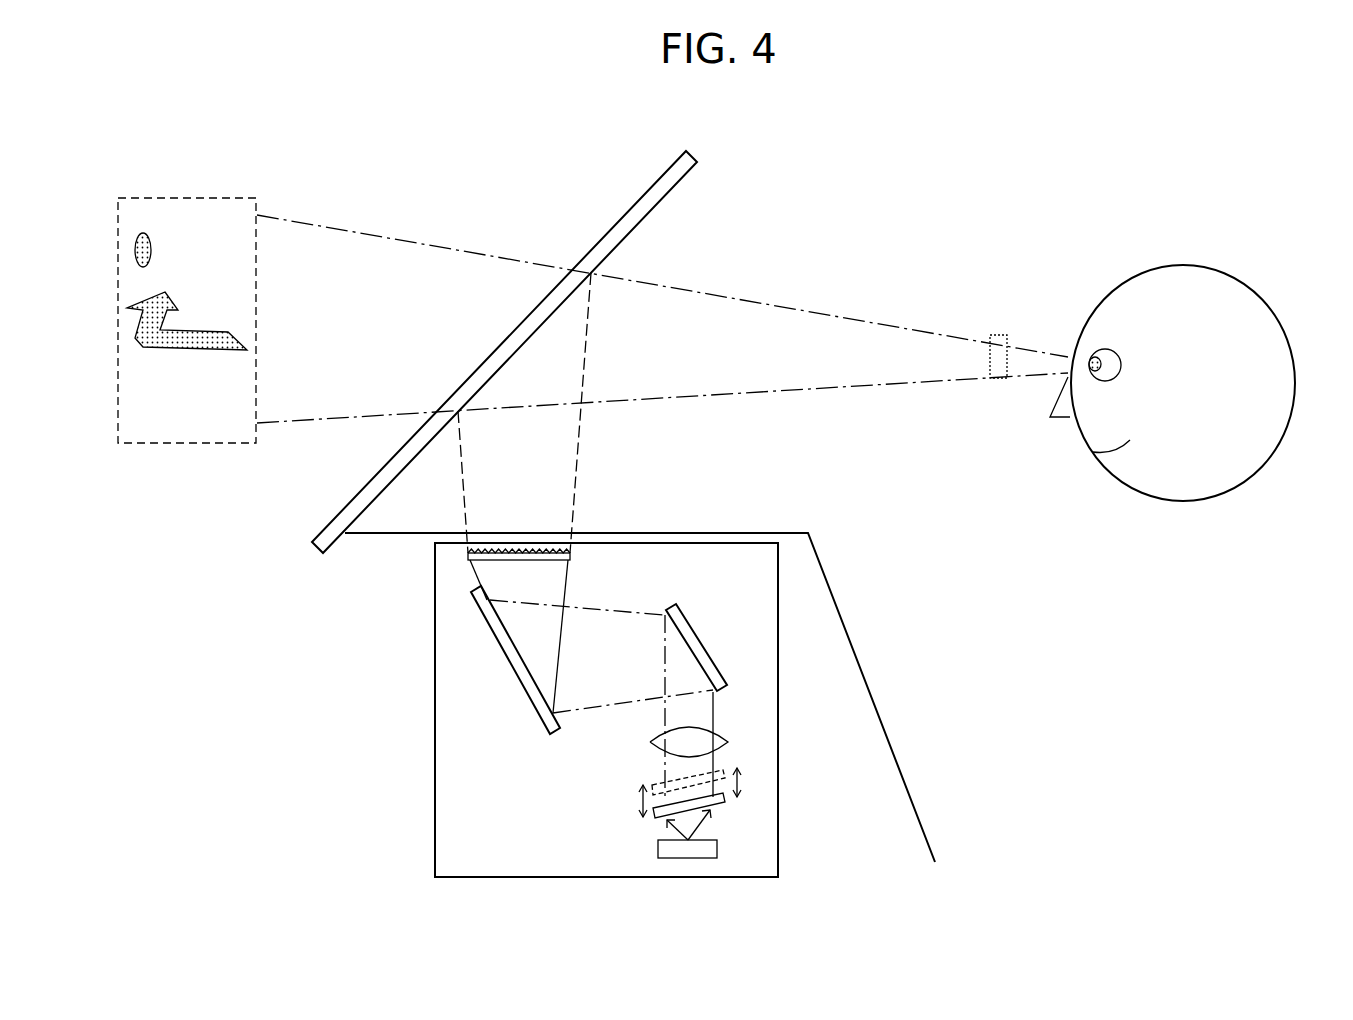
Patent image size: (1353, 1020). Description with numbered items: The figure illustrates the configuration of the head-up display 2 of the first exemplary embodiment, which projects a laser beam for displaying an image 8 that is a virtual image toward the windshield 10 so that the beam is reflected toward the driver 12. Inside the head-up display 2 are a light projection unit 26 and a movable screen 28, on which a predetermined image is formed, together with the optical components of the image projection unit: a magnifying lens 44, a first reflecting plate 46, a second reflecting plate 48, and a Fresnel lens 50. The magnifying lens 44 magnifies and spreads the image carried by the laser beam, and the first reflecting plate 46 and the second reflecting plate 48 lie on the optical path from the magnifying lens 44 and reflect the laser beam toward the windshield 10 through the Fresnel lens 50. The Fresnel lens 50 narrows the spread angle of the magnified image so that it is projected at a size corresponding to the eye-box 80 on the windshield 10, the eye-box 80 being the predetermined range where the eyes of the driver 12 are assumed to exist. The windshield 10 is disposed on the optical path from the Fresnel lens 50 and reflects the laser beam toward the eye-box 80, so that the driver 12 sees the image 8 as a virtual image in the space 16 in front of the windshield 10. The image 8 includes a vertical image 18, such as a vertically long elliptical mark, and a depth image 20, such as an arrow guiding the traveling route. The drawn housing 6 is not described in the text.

The head-up display 2 is at (433, 823).
The housing 6 is at (842, 617).
The image 8 is at (237, 118).
The windshield 10 is at (657, 180).
The driver 12 is at (1282, 378).
The space 16 is at (313, 331).
The vertical image 18 is at (152, 245).
The depth image 20 is at (167, 292).
The light projection unit 26 is at (683, 860).
The movable screen 28 is at (725, 798).
The magnifying lens 44 is at (730, 742).
The first reflecting plate 46 is at (700, 632).
The second reflecting plate 48 is at (508, 660).
The Fresnel lens 50 is at (572, 556).
The eye-box 80 is at (997, 335).